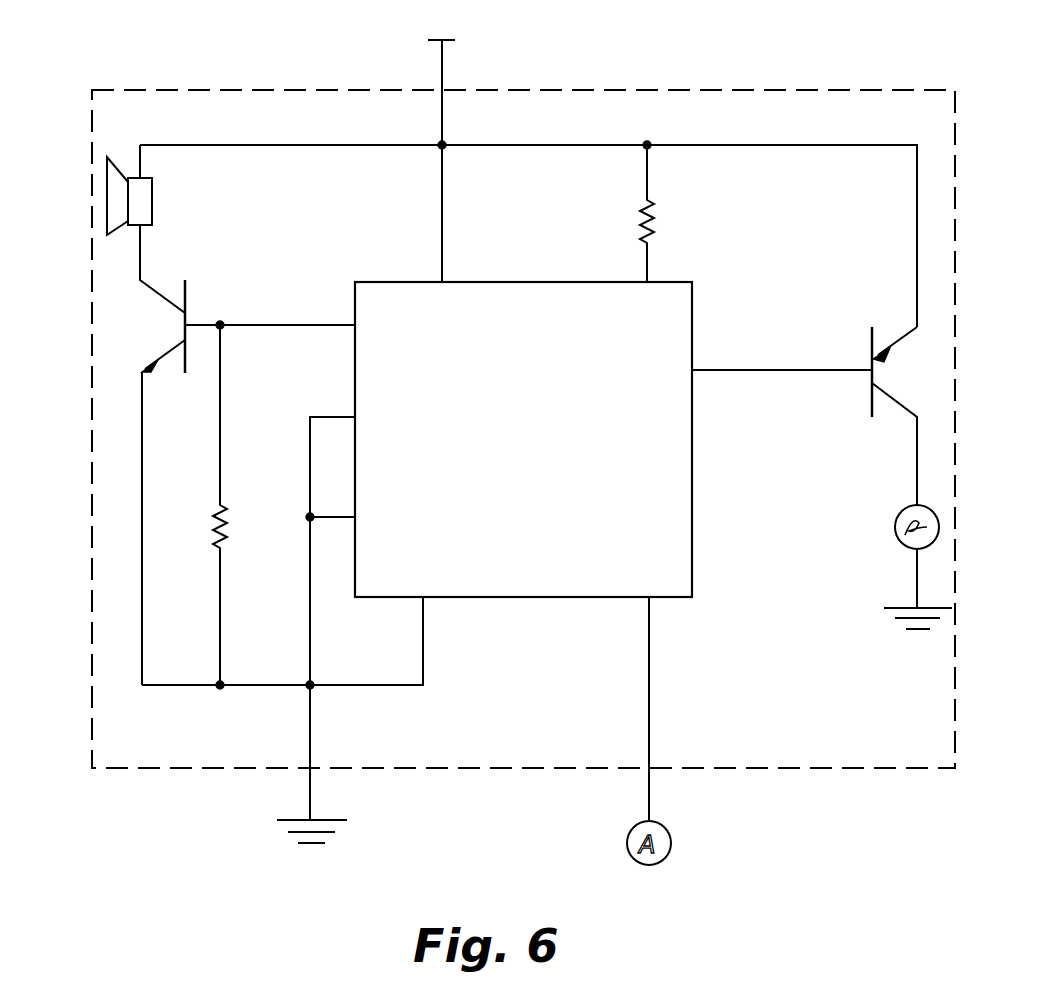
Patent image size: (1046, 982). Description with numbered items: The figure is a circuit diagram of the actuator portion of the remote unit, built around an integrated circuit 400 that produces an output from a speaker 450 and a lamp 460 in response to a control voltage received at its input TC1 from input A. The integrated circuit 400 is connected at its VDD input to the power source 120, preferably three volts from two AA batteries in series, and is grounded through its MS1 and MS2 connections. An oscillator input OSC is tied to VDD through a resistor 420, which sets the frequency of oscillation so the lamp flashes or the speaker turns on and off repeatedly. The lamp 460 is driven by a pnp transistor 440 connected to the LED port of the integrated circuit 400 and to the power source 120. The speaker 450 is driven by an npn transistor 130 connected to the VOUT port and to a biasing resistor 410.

The power source 120 is at (452, 46).
The output transistor 130 is at (158, 290).
The integrated circuit 400 is at (672, 598).
The biasing resistor 410 is at (222, 542).
The resistor 420 is at (657, 210).
The transistor 440 is at (892, 350).
The speaker 450 is at (120, 172).
The lamp 460 is at (898, 515).